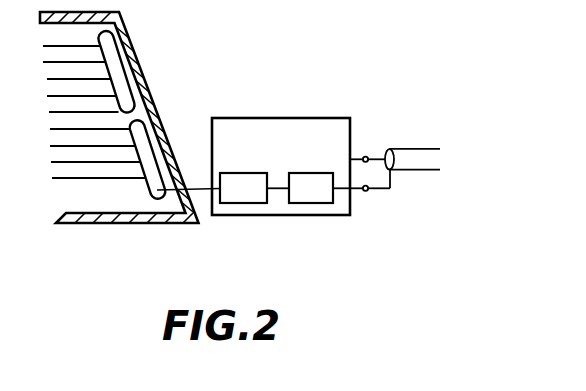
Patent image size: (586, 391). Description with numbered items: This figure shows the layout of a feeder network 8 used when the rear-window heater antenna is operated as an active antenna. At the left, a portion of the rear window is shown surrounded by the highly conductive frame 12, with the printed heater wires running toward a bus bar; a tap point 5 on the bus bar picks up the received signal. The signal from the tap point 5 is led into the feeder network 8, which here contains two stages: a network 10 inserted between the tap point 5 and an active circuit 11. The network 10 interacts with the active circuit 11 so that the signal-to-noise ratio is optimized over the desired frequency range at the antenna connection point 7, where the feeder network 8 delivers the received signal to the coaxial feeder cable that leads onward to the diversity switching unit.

The tap point 5 is at (155, 193).
The antenna connection point 7 is at (370, 152).
The feeder network 8 is at (330, 130).
The network 10 is at (254, 198).
The active circuit 11 is at (320, 198).
The highly conductive frame 12 is at (163, 223).